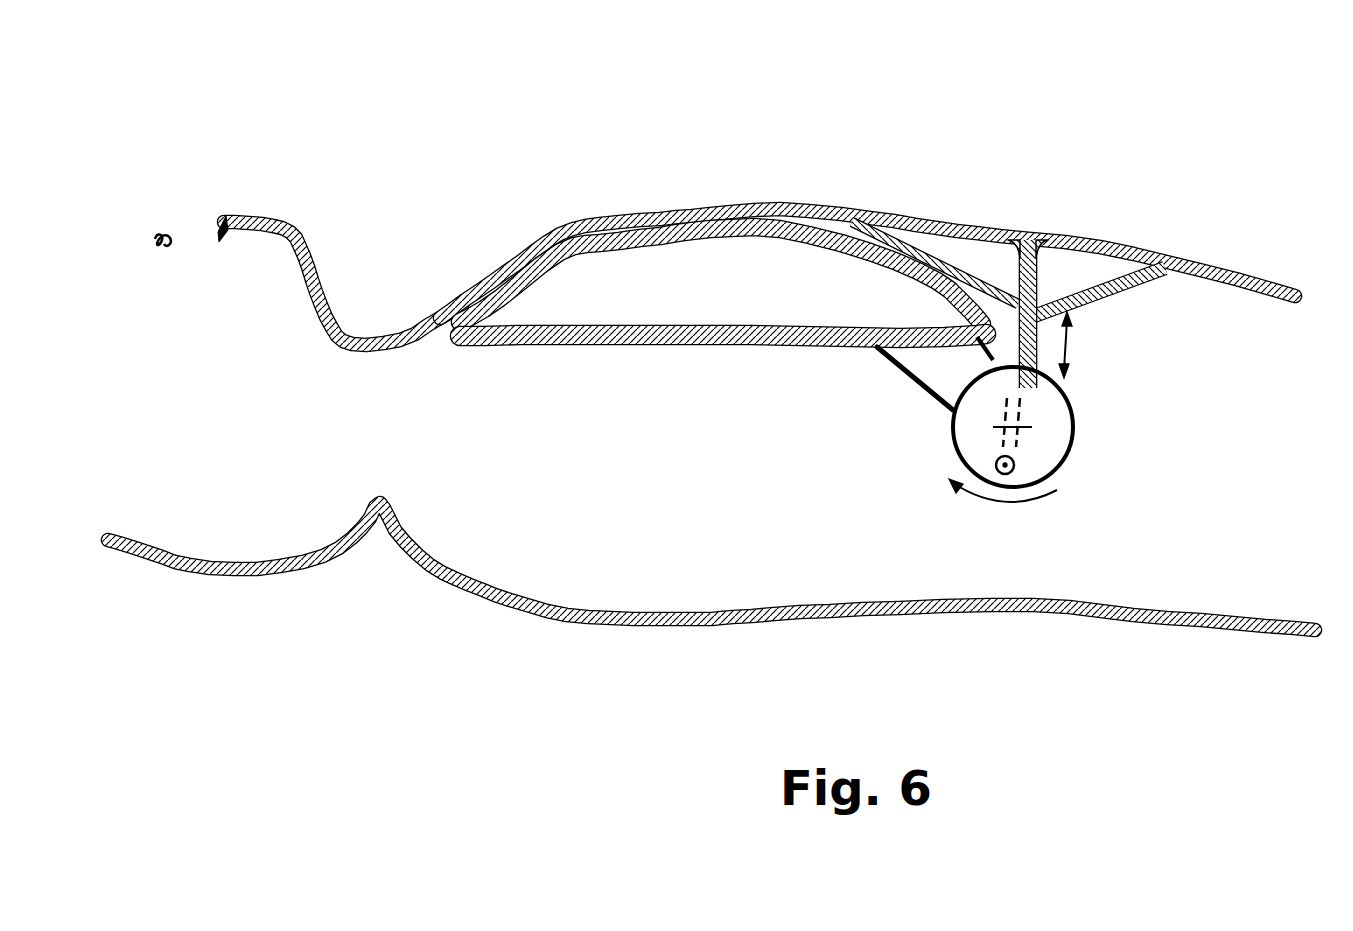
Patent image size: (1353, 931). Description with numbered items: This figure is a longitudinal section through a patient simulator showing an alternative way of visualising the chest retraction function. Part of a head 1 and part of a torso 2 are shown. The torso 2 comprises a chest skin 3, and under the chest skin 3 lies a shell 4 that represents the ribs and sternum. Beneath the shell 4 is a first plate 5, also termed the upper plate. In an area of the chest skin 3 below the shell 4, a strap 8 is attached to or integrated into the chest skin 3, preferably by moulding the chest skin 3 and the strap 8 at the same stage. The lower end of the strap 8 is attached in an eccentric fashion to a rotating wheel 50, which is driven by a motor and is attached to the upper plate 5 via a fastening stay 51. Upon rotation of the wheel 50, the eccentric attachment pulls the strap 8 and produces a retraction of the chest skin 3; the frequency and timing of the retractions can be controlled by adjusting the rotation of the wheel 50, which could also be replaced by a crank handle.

The head 1 is at (327, 215).
The torso 2 is at (905, 138).
The chest skin 3 is at (687, 207).
The shell 4 is at (613, 255).
The first plate 5 is at (583, 326).
The strap 8 is at (1066, 368).
The wheel 50 is at (1060, 430).
The fastening stay 51 is at (930, 368).